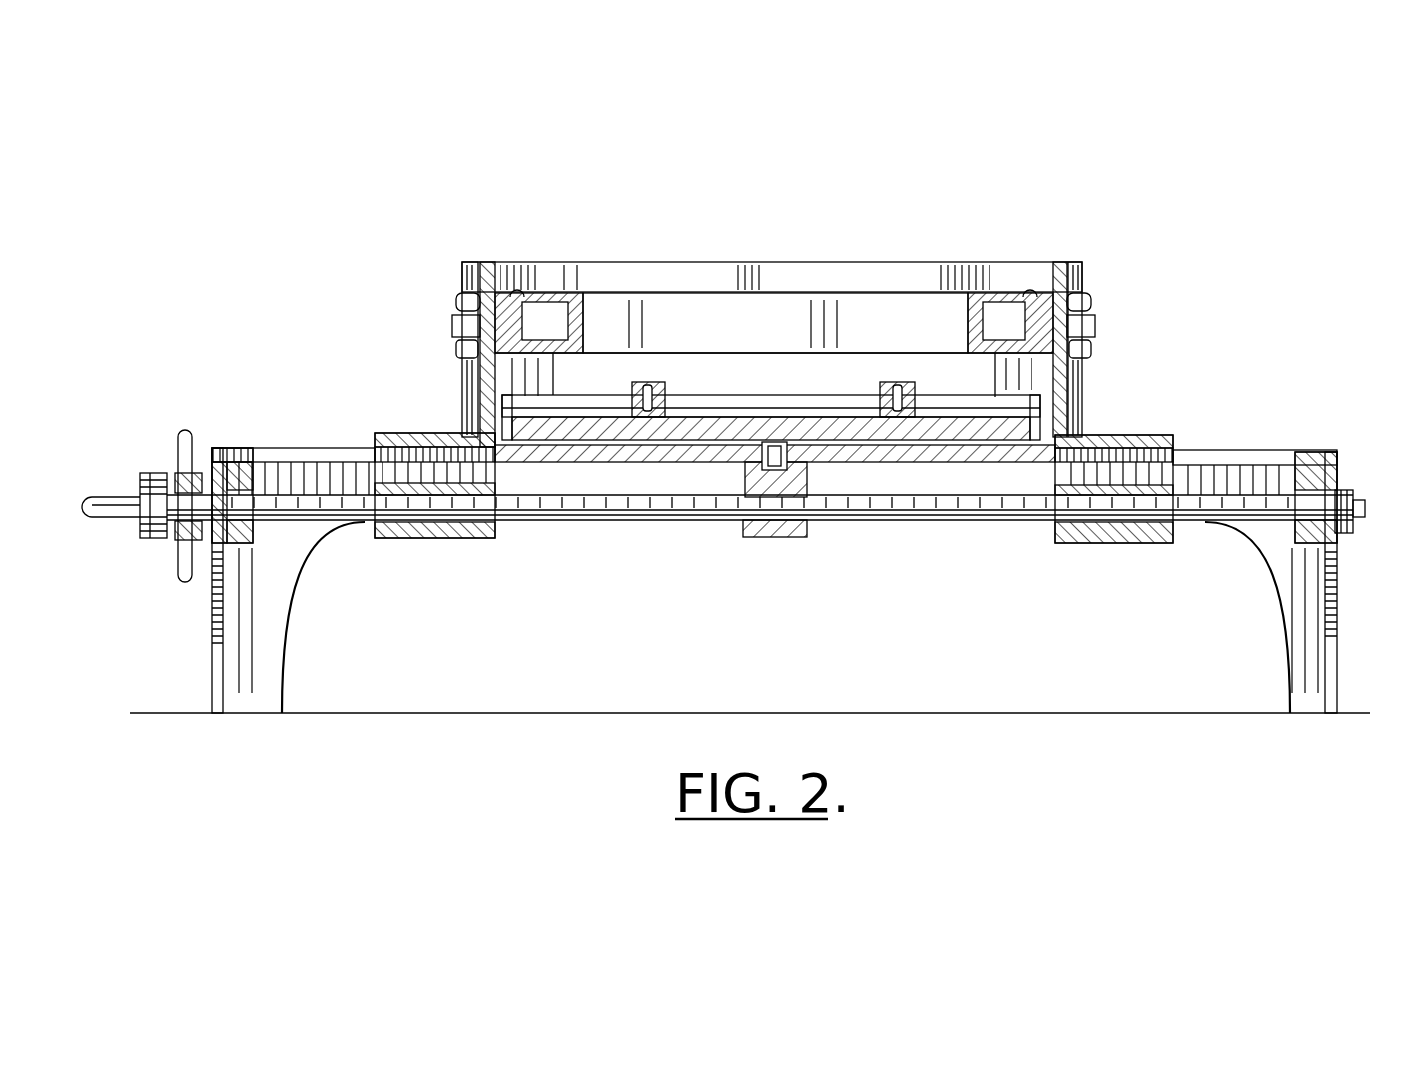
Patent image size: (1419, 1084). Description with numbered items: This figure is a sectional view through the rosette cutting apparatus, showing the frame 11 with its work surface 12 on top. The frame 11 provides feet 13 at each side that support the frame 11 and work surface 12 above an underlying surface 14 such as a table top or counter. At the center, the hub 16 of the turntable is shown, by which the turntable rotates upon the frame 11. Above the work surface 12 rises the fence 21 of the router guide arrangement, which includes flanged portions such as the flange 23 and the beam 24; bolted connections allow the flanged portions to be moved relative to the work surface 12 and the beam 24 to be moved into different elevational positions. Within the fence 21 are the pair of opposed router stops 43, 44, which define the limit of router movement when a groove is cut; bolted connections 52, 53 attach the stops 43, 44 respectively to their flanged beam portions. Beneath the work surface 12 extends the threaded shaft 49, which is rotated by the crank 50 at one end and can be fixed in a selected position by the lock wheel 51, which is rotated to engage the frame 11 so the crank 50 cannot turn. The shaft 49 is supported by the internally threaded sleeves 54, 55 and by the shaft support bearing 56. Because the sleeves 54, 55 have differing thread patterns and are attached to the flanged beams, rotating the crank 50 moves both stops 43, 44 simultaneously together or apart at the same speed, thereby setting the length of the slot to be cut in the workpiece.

The frame 11 is at (297, 565).
The work surface 12 is at (345, 448).
The feet 13 is at (210, 683).
The underlying surface 14 is at (1200, 713).
The hub 16 is at (765, 456).
The fence 21 is at (655, 262).
The flange 23 is at (835, 275).
The beam 24 is at (778, 335).
The router stop 43 is at (537, 294).
The router stop 44 is at (1000, 292).
The threaded shaft 49 is at (513, 538).
The crank 50 is at (118, 505).
The lock wheel 51 is at (192, 430).
The bolted connection 52 is at (452, 323).
The bolted connection 53 is at (1088, 325).
The internally threaded sleeve 54 is at (398, 538).
The internally threaded sleeve 55 is at (1137, 543).
The shaft support bearing 56 is at (775, 537).